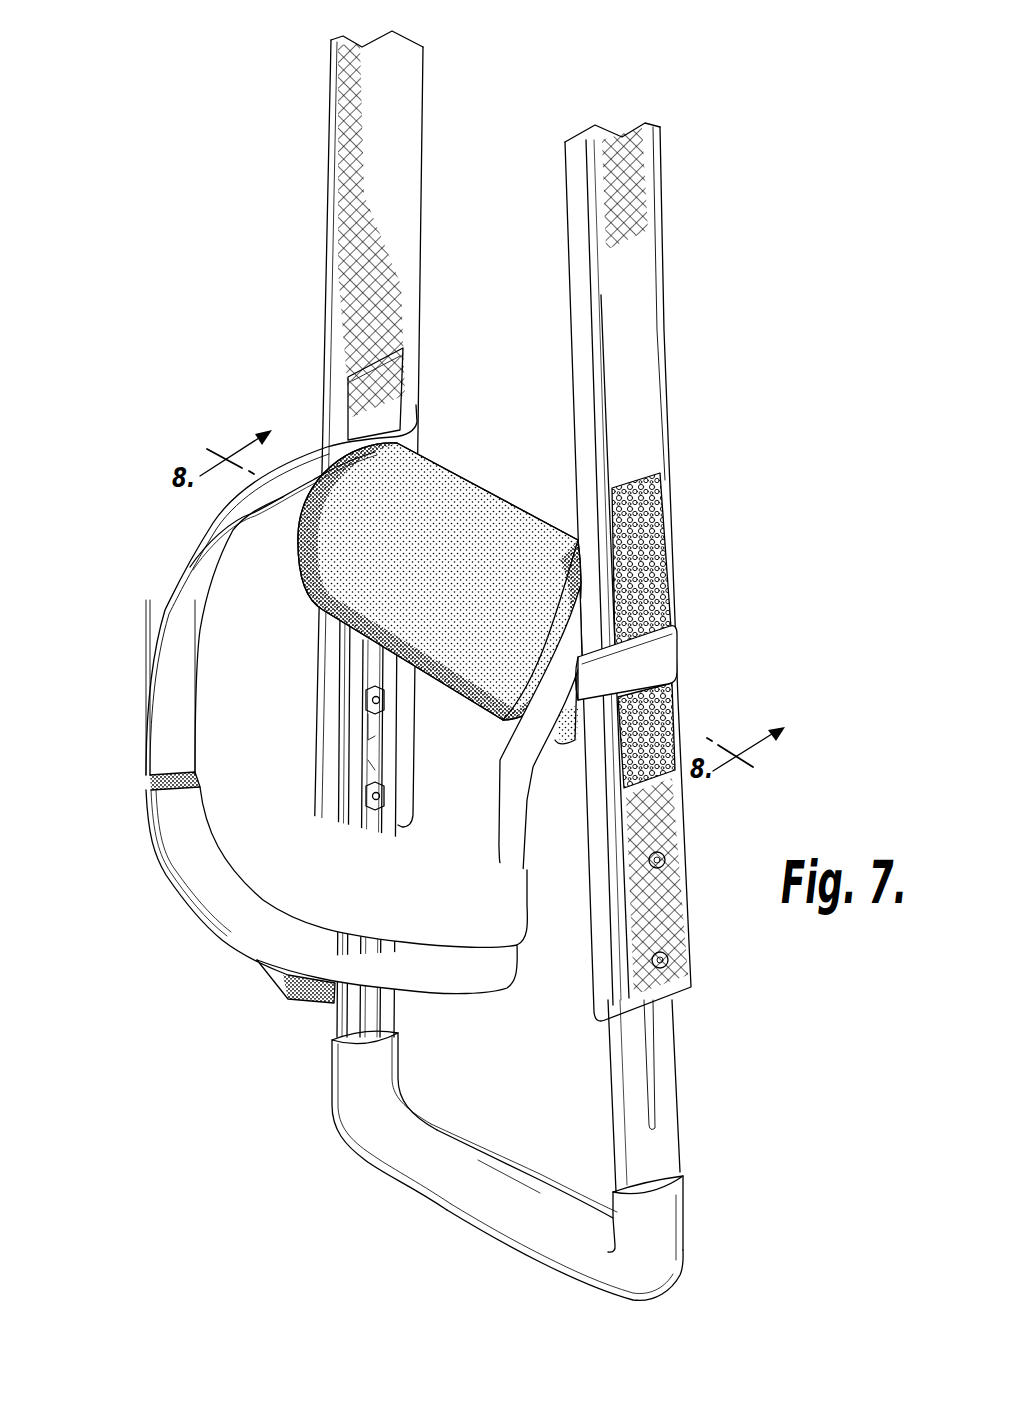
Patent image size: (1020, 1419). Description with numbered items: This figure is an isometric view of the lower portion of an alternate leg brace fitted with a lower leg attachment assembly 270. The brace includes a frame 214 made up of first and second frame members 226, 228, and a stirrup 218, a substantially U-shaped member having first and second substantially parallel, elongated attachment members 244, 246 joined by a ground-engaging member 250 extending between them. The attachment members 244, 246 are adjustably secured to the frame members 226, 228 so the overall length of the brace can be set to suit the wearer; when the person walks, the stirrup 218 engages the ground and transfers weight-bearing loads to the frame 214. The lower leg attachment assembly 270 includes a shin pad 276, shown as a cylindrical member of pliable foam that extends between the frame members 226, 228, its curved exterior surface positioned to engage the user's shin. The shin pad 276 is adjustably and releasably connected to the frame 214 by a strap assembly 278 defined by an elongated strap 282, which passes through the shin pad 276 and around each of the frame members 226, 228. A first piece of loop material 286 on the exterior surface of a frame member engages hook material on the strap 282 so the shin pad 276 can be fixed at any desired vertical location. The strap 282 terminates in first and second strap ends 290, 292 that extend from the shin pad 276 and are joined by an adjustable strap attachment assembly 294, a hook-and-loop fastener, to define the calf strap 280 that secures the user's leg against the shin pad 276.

The frame 214 is at (686, 657).
The stirrup 218 is at (463, 1179).
The first frame member 226 is at (357, 128).
The second frame member 228 is at (652, 216).
The first attachment member 244 is at (350, 890).
The second attachment member 246 is at (668, 1075).
The ground-engaging member 250 is at (532, 1252).
The lower leg attachment assembly 270 is at (431, 706).
The shin pad 276 is at (486, 482).
The strap assembly 278 is at (688, 664).
The calf strap 280 is at (175, 552).
The strap 282 is at (674, 673).
The first piece of loop material 286 is at (658, 563).
The first strap end 290 is at (157, 652).
The second strap end 292 is at (477, 982).
The adjustable strap attachment assembly 294 is at (165, 896).